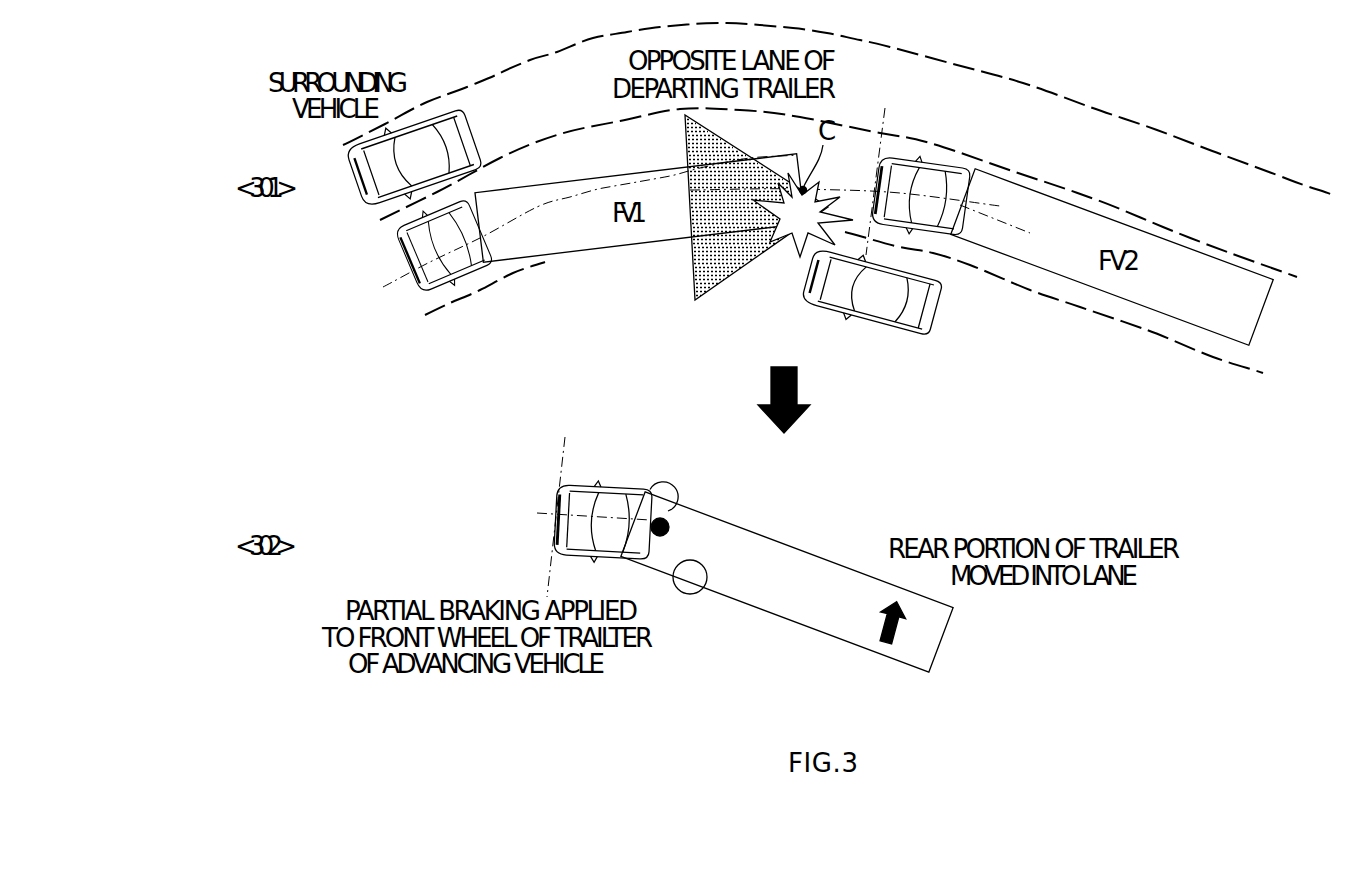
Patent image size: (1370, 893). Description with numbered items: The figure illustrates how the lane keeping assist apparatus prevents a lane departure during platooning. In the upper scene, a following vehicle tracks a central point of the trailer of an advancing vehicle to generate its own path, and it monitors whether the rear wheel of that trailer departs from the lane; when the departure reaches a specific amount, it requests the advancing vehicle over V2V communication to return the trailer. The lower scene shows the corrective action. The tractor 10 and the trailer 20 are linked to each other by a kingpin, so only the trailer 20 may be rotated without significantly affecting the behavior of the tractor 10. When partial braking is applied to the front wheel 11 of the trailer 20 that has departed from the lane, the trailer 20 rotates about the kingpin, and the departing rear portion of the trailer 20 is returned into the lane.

The tractor 10 is at (585, 482).
The front wheel 11 is at (690, 597).
The trailer 20 is at (800, 556).